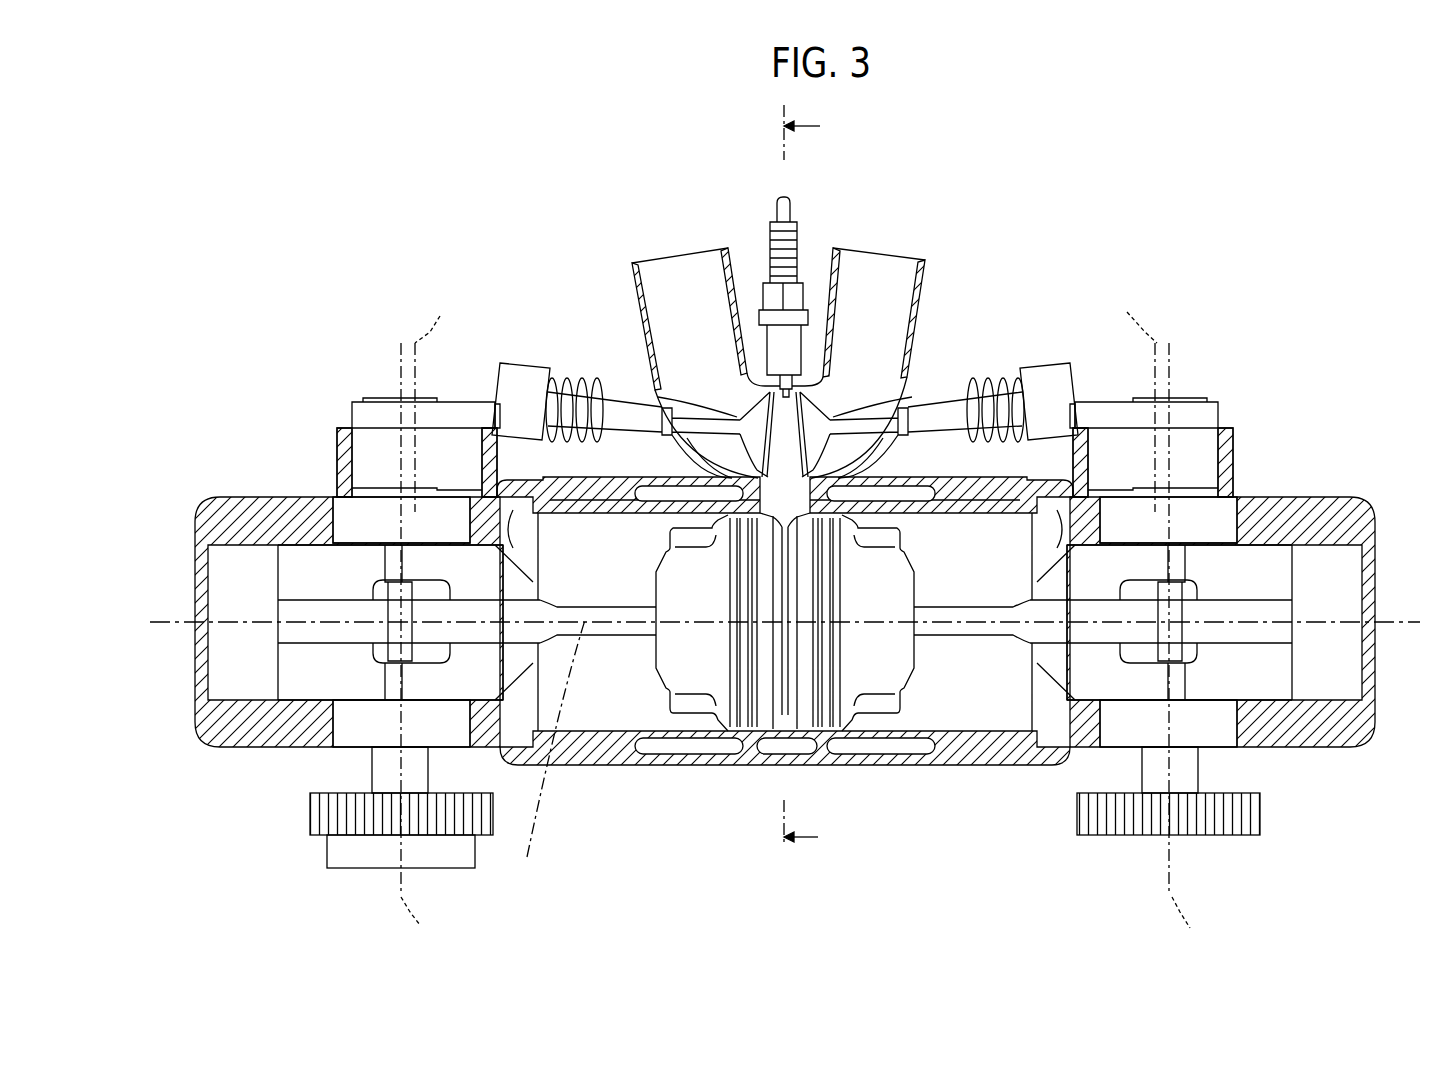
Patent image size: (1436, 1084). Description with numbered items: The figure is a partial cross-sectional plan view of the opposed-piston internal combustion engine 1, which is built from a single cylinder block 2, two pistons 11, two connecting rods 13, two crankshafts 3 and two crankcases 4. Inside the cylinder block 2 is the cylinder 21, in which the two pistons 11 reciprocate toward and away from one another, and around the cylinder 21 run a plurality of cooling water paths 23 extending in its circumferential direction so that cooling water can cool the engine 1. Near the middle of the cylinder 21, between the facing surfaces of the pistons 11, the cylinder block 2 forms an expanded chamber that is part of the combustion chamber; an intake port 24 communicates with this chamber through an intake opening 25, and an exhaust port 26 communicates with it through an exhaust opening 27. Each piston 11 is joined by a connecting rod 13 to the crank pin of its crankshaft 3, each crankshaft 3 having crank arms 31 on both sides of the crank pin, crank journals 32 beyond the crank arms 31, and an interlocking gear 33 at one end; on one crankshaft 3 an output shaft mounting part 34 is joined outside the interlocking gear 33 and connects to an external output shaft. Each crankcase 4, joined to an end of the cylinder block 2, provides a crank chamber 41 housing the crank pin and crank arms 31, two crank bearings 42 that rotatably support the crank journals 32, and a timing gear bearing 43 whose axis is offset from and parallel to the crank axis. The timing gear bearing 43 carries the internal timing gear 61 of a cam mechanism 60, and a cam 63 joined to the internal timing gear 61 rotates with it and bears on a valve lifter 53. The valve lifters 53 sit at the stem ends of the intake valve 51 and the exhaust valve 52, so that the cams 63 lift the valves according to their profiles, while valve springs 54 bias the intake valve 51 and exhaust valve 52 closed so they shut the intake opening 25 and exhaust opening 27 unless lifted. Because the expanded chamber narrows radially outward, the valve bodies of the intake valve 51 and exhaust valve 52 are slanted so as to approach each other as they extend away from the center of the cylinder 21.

The internal combustion engine 1 is at (581, 182).
The cylinder block 2 is at (720, 774).
The crankshaft 3 is at (347, 394).
The crankcase 4 is at (188, 510).
The piston 11 is at (687, 683).
The connecting rod 13 is at (622, 630).
The cylinder 21 is at (587, 655).
The cooling water path 23 is at (770, 754).
The intake port 24 is at (672, 280).
The intake opening 25 is at (786, 447).
The exhaust port 26 is at (892, 273).
The exhaust opening 27 is at (840, 262).
The crank arm 31 is at (322, 675).
The crank journal 32 is at (345, 512).
The interlocking gear 33 is at (323, 817).
The output shaft mounting part 34 is at (347, 853).
The crank chamber 41 is at (240, 687).
The crank bearing 42 is at (325, 520).
The timing gear bearing 43 is at (345, 435).
The intake valve 51 is at (710, 425).
The exhaust valve 52 is at (786, 418).
The valve lifter 53 is at (521, 385).
The valve spring 54 is at (568, 380).
The cam mechanism 60 is at (450, 392).
The internal timing gear 61 is at (377, 453).
The cam 63 is at (477, 405).